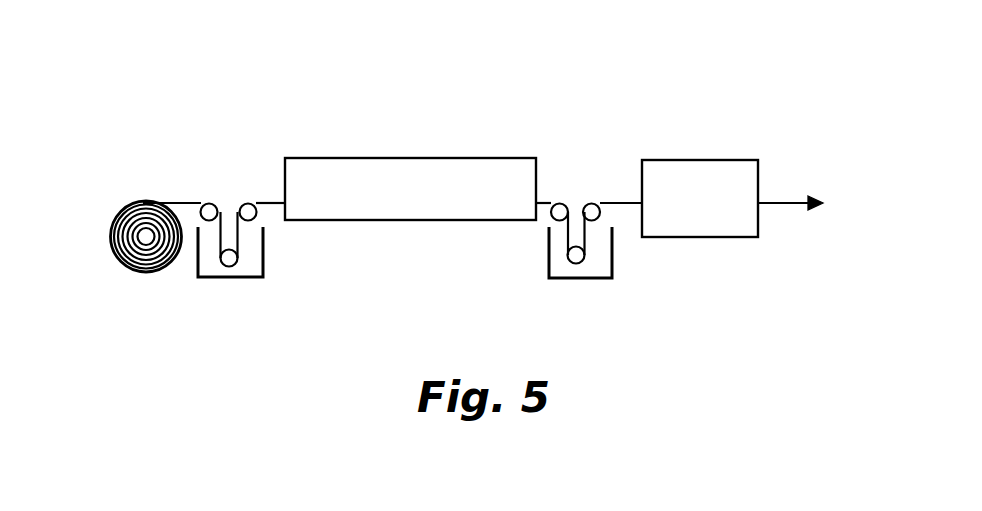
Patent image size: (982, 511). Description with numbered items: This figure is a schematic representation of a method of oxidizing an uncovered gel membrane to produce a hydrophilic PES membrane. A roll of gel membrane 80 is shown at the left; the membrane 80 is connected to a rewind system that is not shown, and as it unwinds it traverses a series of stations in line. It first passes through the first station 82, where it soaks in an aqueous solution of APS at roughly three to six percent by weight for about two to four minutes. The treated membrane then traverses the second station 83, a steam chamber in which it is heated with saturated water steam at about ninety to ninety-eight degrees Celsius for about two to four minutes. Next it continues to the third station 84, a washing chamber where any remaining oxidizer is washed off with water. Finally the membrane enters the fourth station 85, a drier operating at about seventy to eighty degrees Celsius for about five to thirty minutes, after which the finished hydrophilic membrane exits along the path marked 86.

The roll of gel membrane 80 is at (143, 202).
The first station 82 is at (229, 206).
The second station 83 is at (383, 157).
The third station 84 is at (573, 205).
The fourth station 85 is at (667, 159).
The output of finished web 86 is at (788, 202).